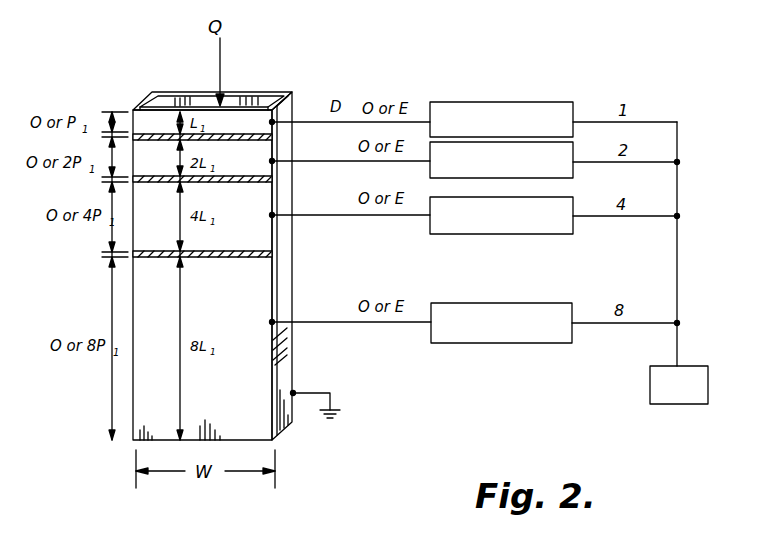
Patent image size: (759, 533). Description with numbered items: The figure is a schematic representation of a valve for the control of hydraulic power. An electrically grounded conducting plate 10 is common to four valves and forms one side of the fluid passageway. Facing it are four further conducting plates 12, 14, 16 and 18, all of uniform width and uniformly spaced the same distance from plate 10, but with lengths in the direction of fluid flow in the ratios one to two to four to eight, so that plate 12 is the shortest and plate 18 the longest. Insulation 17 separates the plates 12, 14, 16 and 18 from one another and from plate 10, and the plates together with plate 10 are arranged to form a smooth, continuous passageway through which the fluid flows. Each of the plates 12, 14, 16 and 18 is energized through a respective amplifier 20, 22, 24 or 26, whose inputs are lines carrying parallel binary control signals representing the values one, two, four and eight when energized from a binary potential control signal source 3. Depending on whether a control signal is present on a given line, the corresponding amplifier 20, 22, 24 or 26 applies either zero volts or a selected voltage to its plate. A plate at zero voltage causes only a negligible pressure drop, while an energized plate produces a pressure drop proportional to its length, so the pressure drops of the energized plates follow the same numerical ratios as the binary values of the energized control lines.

The plate 10 is at (258, 92).
The plate 12 is at (334, 123).
The plate 14 is at (334, 163).
The plate 16 is at (334, 228).
The plate 18 is at (328, 367).
The insulation 17 is at (150, 104).
The amplifier 20 is at (500, 102).
The amplifier 22 is at (560, 178).
The amplifier 24 is at (445, 234).
The amplifier 26 is at (455, 343).
The binary potential control signal source 3 is at (679, 385).